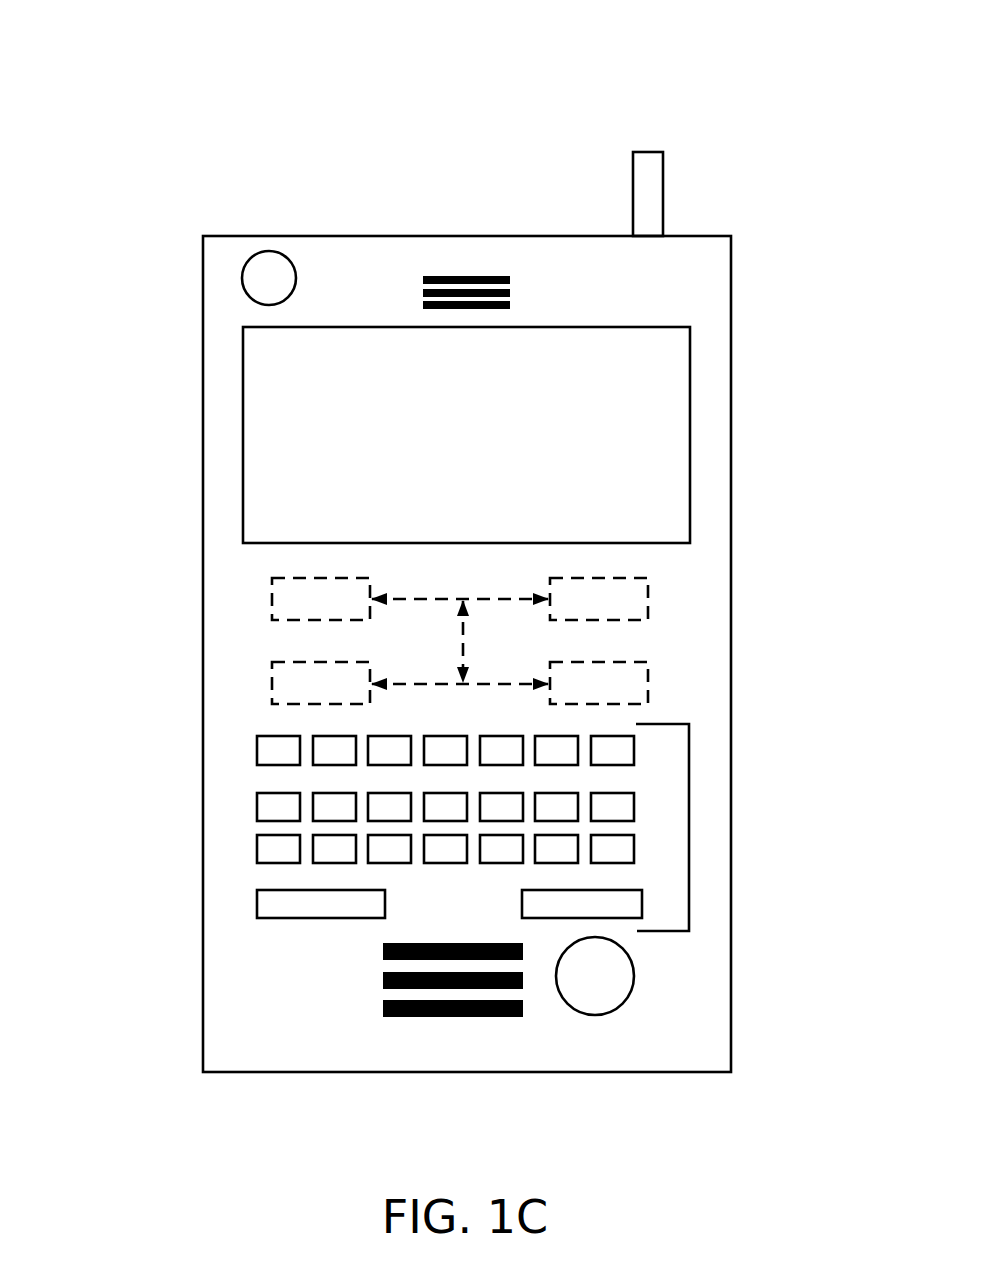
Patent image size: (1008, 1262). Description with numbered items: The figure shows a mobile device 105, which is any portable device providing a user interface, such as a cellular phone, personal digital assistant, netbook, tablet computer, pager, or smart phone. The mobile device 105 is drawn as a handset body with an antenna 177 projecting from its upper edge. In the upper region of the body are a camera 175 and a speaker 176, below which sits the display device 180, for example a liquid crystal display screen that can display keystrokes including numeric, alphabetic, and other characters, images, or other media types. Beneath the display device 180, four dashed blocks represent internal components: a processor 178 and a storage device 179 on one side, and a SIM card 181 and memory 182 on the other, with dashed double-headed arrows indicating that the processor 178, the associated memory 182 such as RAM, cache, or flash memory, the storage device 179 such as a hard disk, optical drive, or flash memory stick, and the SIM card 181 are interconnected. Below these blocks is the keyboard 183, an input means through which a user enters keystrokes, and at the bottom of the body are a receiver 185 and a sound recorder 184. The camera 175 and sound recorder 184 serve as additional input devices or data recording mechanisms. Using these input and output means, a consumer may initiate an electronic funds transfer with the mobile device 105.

The mobile device 105 is at (207, 84).
The camera 175 is at (186, 245).
The speaker 176 is at (463, 275).
The antenna 177 is at (648, 194).
The processor 178 is at (270, 599).
The storage device 179 is at (270, 684).
The display device 180 is at (547, 435).
The SIM card 181 is at (650, 599).
The memory 182 is at (650, 684).
The keyboard 183 is at (690, 819).
The sound recorder 184 is at (697, 957).
The receiver 185 is at (390, 1043).